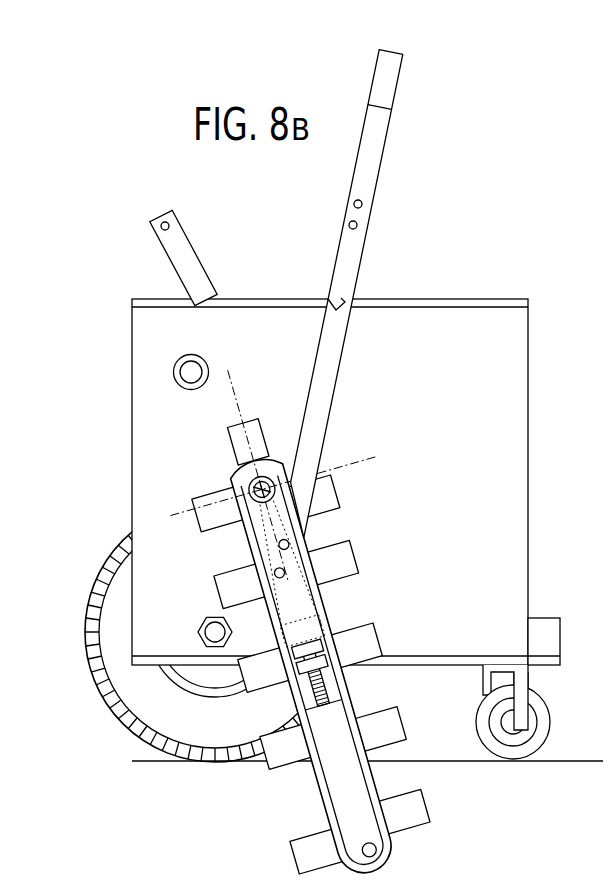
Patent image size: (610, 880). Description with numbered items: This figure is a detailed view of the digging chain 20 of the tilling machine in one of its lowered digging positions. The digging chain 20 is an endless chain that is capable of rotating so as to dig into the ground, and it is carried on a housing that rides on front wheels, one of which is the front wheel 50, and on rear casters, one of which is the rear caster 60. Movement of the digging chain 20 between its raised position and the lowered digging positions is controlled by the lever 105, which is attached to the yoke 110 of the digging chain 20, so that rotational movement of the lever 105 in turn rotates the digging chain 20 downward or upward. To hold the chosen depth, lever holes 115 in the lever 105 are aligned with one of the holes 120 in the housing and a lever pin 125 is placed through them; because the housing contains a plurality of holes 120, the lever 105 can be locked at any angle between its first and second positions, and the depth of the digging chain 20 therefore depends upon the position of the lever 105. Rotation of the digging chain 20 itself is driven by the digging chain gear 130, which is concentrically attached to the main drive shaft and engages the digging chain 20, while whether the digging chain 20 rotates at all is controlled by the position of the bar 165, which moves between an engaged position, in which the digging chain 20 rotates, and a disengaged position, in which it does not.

The digging chain 20 is at (327, 600).
The front wheel 50 is at (112, 610).
The rear caster 60 is at (530, 683).
The lever 105 is at (382, 84).
The yoke 110 is at (302, 568).
The lever holes 115 is at (347, 226).
The holes 120 is at (333, 300).
The lever pin 125 is at (352, 295).
The digging chain gear 130 is at (231, 480).
The bar 165 is at (186, 276).